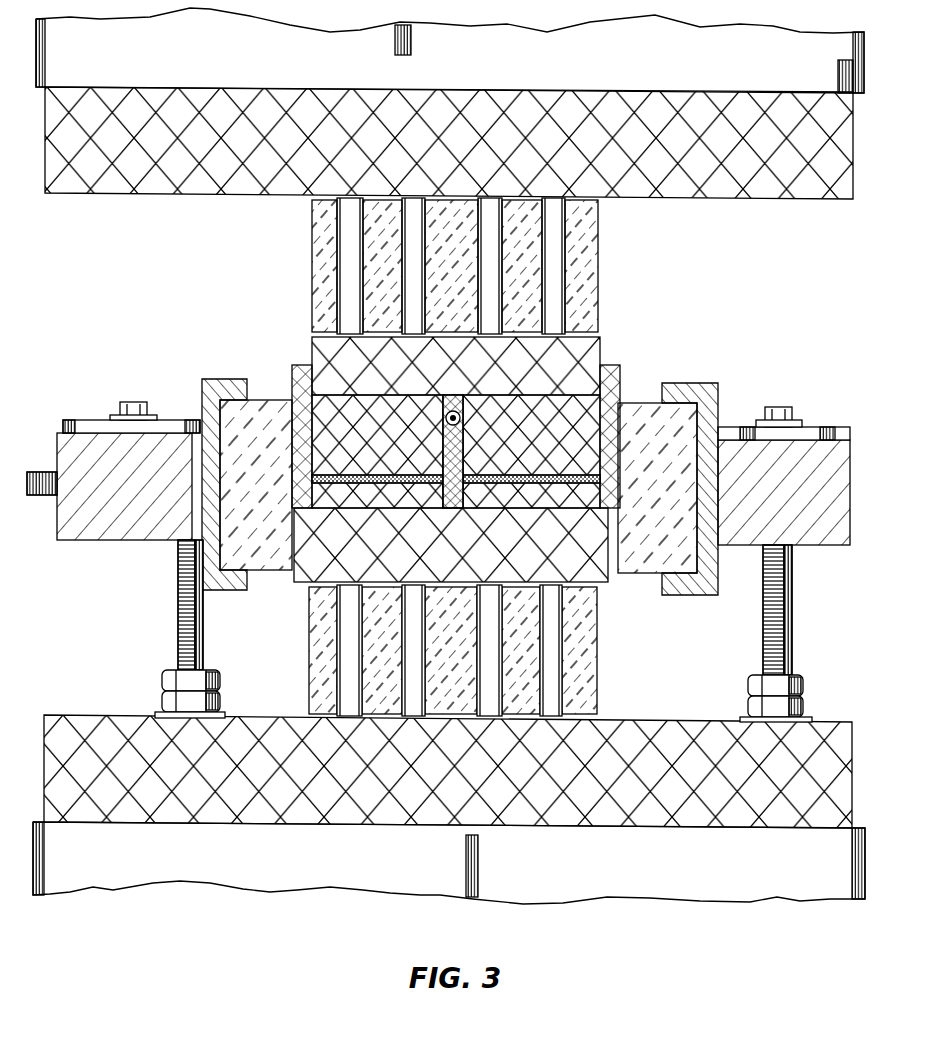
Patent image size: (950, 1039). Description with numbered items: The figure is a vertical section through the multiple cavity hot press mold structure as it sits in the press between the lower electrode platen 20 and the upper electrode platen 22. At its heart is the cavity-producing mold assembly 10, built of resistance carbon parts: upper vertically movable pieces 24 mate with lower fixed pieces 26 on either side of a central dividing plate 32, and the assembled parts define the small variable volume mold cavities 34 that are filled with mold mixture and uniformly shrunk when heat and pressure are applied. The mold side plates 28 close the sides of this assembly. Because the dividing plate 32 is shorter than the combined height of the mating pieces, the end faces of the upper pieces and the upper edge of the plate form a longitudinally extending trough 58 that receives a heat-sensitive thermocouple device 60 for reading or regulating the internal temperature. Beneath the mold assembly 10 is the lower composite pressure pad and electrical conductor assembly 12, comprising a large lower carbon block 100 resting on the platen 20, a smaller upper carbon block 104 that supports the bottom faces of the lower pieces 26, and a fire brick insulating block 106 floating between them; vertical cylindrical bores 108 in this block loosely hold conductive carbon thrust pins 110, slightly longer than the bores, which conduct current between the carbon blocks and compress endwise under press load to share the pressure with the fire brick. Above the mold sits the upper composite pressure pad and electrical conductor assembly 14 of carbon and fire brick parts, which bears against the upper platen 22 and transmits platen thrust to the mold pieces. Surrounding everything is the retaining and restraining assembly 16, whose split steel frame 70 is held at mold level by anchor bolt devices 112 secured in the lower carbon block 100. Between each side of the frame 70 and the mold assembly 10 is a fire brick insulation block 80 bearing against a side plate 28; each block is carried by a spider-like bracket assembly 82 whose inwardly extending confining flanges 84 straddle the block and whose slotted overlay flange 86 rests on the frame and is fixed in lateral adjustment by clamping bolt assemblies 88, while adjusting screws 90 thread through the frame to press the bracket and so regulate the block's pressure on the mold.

The cavity-producing mold assembly 10 is at (584, 411).
The lower composite pressure pad and electrical conductor assembly 12 is at (612, 718).
The upper composite pressure pad and electrical conductor assembly 14 is at (310, 216).
The retaining and restraining assembly 16 is at (160, 563).
The lower electrode platen 20 is at (641, 862).
The upper electrode platen 22 is at (675, 74).
The upper vertically movable mold pieces 24 is at (348, 438).
The lower fixed mold pieces 26 is at (343, 507).
The mold side plates 28 is at (300, 366).
The central dividing or partition plate 32 is at (470, 452).
The variable volume mold cavities 34 is at (521, 479).
The longitudinally extending trough 58 is at (453, 410).
The heat-sensitive thermocouple device 60 is at (448, 420).
The steel frame 70 is at (72, 540).
The insulation block 80 is at (258, 408).
The spider-like bracket assembly 82 is at (209, 370).
The confining flanges 84 is at (222, 382).
The overlay flange 86 is at (92, 420).
The clamping bolt assemblies 88 is at (148, 404).
The adjusting screws 90 is at (34, 490).
The lower carbon block 100 is at (101, 722).
The upper carbon block 104 is at (604, 574).
The fire brick insulating block 106 is at (315, 660).
The vertical cylindrical bores 108 is at (340, 688).
The conductive carbon thrust pins 110 is at (328, 625).
The anchor bolt devices 112 is at (178, 636).